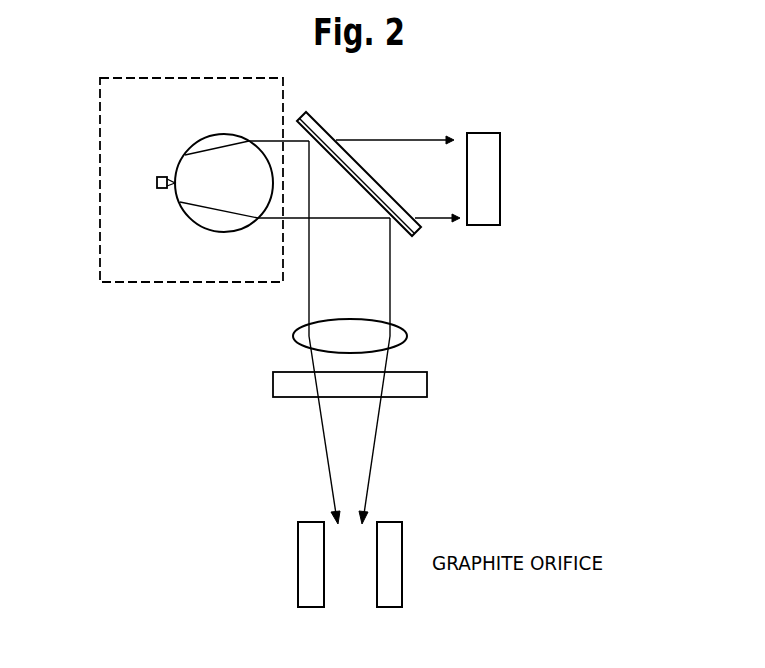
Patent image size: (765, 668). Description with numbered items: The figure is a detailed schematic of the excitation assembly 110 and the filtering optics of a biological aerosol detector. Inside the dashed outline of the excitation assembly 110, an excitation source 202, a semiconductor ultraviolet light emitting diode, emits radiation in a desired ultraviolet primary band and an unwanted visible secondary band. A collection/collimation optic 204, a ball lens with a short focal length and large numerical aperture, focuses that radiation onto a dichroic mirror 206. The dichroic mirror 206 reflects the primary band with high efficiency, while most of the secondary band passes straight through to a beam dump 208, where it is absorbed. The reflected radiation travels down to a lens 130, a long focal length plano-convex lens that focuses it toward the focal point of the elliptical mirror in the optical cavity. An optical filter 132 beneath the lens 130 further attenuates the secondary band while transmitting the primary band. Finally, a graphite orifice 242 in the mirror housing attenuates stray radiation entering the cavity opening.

The excitation assembly 110 is at (100, 205).
The excitation source 202 is at (160, 189).
The collection/collimation optic 204 is at (200, 141).
The dichroic mirror 206 is at (400, 232).
The beam dump 208 is at (500, 140).
The lens 130 is at (293, 332).
The optical filter 132 is at (275, 386).
The graphite orifice 242 is at (303, 530).